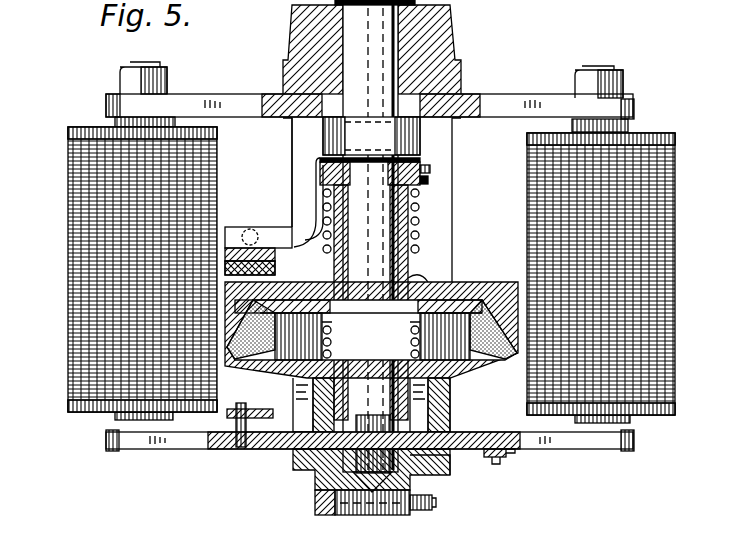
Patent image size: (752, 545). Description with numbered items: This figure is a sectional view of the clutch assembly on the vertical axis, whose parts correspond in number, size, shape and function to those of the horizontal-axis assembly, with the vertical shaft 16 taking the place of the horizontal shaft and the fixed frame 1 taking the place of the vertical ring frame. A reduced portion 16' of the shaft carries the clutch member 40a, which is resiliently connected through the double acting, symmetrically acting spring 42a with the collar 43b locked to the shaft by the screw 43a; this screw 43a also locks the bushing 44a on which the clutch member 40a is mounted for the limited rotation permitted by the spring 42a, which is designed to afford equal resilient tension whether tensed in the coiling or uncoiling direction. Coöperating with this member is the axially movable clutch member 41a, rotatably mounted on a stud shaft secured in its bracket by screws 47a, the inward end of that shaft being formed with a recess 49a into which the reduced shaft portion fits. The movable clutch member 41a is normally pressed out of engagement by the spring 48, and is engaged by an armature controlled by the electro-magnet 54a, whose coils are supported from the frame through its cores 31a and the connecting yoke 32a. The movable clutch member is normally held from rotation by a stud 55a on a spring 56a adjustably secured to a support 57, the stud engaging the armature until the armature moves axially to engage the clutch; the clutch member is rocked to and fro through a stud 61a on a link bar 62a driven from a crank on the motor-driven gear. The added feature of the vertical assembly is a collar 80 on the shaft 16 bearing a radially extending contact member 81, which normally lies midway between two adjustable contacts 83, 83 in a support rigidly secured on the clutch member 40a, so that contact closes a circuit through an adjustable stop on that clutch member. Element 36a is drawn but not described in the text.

The fixed frame 1 is at (460, 74).
The vertical shaft 16 is at (375, 246).
The reduced portion of vertical shaft 16' is at (403, 148).
The connecting yoke 32a is at (190, 96).
The cores 31a is at (116, 414).
The electro-magnet 54a is at (70, 315).
The collar 80 is at (322, 133).
The contact member 81 is at (233, 227).
The adjustable contacts 83 is at (262, 232).
The screw 43a is at (430, 166).
The collar 43b is at (428, 183).
The spring 42a is at (420, 205).
The bushing 44a is at (418, 240).
The clutch member 40a is at (460, 283).
The axially movable clutch member 41a is at (455, 372).
The spring 48 is at (437, 380).
The recess 49a is at (315, 494).
The screws 47a is at (436, 505).
The lower boss 36a is at (440, 500).
The support 57 is at (484, 455).
The stud 55a is at (494, 465).
The spring 56a is at (508, 454).
The stud 61a is at (240, 448).
The link bar 62a is at (230, 412).